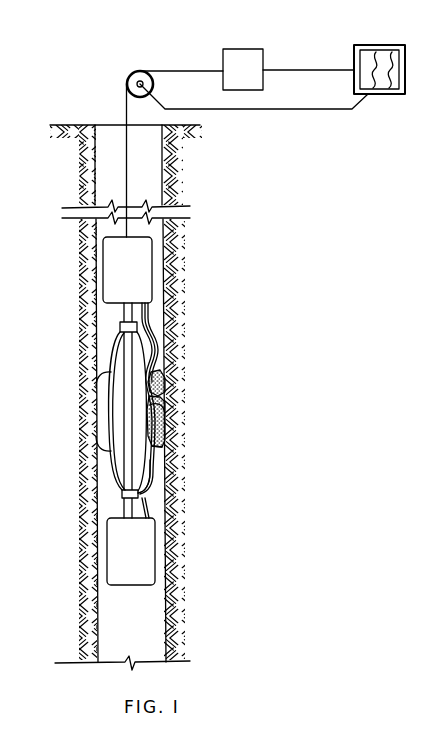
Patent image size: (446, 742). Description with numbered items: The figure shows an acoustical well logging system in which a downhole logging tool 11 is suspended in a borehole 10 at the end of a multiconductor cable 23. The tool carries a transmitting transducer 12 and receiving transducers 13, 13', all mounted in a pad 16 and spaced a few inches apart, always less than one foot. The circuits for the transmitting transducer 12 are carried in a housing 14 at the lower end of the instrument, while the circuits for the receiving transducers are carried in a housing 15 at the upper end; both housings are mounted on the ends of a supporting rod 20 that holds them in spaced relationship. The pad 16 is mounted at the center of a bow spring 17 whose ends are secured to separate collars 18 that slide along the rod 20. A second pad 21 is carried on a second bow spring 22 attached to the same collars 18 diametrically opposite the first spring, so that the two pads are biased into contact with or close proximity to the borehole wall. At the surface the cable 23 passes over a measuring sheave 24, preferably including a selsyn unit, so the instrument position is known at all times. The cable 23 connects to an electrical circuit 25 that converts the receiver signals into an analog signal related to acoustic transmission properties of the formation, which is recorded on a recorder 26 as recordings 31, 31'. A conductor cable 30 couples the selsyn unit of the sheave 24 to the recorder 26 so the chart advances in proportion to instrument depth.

The borehole 10 is at (163, 193).
The downhole logging tool 11 is at (70, 322).
The transmitting transducer 12 is at (165, 428).
The receiving transducer 13 is at (189, 411).
The receiving transducer 13' is at (189, 383).
The housing 14 is at (124, 558).
The housing 15 is at (121, 267).
The pad 16 is at (163, 445).
The bow spring 17 is at (152, 470).
The collars 18 is at (153, 322).
The supporting rod 20 is at (127, 362).
The second pad 21 is at (104, 418).
The second bow spring 22 is at (110, 463).
The multiconductor cable 23 is at (125, 108).
The measuring sheave 24 is at (153, 86).
The electrical circuit 25 is at (223, 58).
The recorder 26 is at (399, 64).
The conductor cable 30 is at (305, 108).
The recording 31 is at (369, 56).
The recording 31' is at (404, 56).